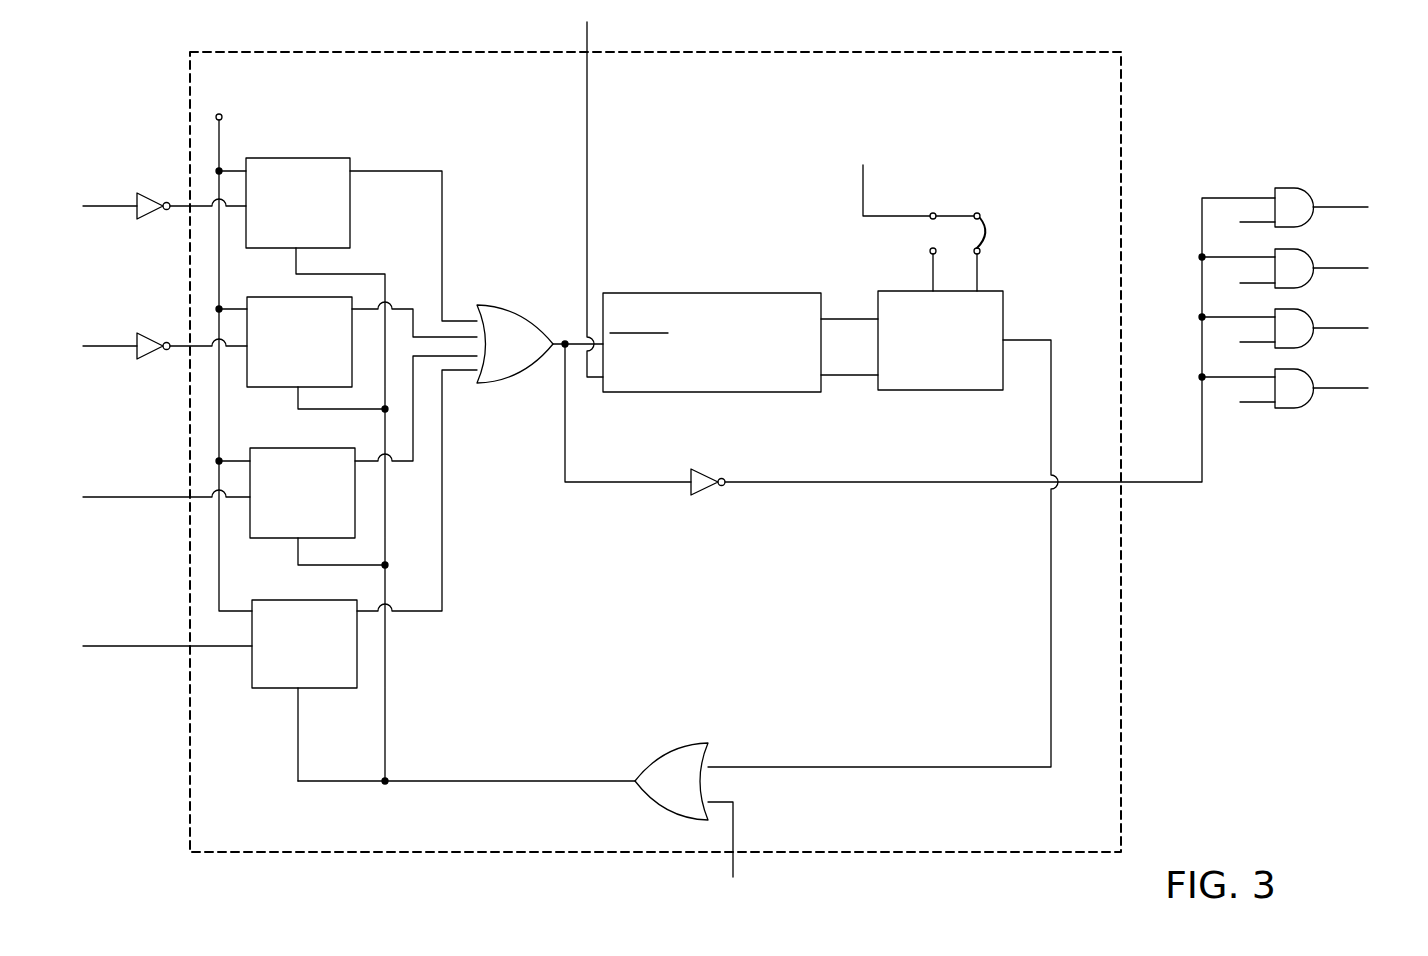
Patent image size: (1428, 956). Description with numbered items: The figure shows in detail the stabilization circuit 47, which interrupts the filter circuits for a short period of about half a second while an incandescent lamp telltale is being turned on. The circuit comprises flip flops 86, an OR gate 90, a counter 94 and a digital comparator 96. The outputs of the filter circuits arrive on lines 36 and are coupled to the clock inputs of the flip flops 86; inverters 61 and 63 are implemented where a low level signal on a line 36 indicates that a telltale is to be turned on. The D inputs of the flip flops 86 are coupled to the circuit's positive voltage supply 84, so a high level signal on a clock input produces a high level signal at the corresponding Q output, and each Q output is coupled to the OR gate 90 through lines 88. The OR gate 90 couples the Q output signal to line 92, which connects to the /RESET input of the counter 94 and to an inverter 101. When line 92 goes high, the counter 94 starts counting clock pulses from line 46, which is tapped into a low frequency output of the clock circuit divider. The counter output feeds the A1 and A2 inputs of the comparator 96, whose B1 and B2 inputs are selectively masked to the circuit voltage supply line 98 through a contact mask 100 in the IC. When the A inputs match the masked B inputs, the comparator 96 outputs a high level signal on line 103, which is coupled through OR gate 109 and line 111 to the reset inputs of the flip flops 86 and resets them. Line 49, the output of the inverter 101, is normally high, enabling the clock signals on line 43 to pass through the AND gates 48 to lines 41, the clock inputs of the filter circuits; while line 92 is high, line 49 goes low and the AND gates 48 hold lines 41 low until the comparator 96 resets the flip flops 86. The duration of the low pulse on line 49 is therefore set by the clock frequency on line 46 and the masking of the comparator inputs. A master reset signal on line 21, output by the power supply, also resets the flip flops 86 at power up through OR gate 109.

The master reset line 21 is at (735, 865).
The filter circuit output lines 36 is at (116, 205).
The clock input lines 41 is at (1336, 208).
The clock signal line 43 is at (1248, 281).
The clock pulse line 46 is at (590, 33).
The stabilization circuit 47 is at (622, 853).
The AND gates 48 is at (1287, 186).
The output line of inverter 101 49 is at (1140, 483).
The inverter 61 is at (152, 198).
The inverter 63 is at (150, 338).
The positive voltage supply 84 is at (222, 153).
The flip flops 86 is at (303, 158).
The Q output lines 88 is at (457, 319).
The OR gate 90 is at (523, 334).
The OR gate output line 92 is at (555, 350).
The counter 94 is at (722, 394).
The digital comparator 96 is at (963, 392).
The circuit voltage supply line 98 is at (881, 213).
The contact mask 100 is at (989, 229).
The inverter 101 is at (703, 476).
The comparator output line 103 is at (1014, 333).
The OR gate 109 is at (660, 764).
The reset line 111 is at (387, 708).